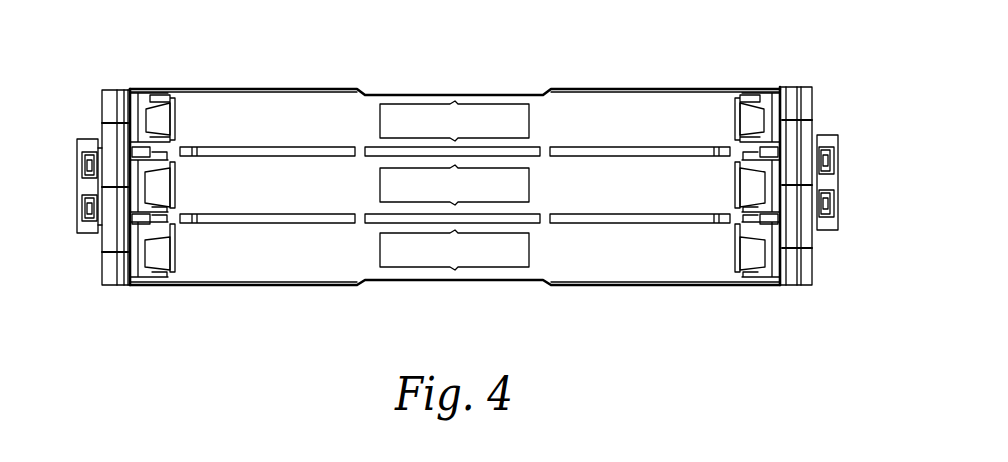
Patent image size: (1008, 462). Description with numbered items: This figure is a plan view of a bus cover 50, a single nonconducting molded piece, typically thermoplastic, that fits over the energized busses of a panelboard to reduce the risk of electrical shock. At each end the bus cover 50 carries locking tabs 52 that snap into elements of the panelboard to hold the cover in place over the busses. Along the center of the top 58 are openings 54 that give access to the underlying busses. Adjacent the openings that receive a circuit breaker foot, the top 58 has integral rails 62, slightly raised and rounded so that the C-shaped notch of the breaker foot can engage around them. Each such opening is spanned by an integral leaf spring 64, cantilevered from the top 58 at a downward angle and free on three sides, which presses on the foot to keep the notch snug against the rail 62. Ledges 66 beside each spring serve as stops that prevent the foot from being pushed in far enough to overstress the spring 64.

The bus cover 50 is at (270, 305).
The locking tabs 52 is at (75, 148).
The openings 54 is at (425, 117).
The top 58 is at (610, 113).
The rails 62 is at (131, 89).
The leaf spring 64 is at (160, 120).
The ledges 66 is at (752, 87).